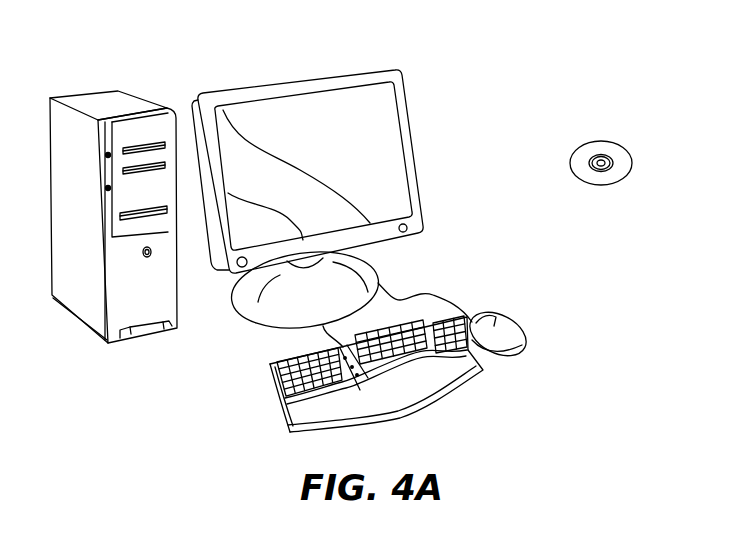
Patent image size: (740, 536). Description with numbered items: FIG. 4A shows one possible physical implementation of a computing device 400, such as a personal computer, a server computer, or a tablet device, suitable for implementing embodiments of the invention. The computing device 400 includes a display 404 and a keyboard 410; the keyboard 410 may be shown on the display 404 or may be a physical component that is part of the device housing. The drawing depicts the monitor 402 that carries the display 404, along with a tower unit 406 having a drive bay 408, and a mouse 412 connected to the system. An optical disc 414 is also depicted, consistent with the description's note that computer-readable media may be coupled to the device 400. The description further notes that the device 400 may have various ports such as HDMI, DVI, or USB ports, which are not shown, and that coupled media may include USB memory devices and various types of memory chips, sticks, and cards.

The computing device 400 is at (534, 52).
The monitor 402 is at (418, 170).
The display 404 is at (375, 110).
The computer tower 406 is at (100, 102).
The drive bay 408 is at (163, 213).
The keyboard 410 is at (278, 405).
The mouse 412 is at (520, 323).
The optical disc 414 is at (617, 142).